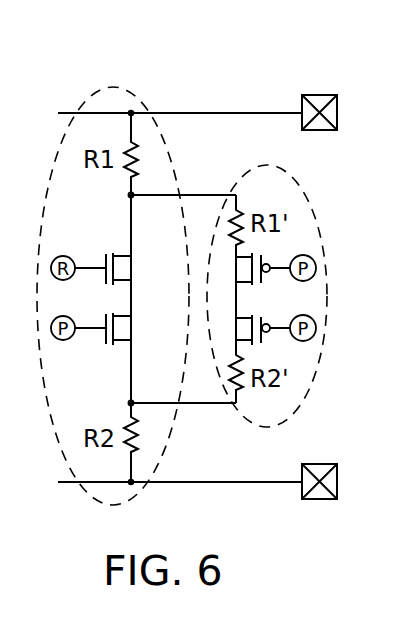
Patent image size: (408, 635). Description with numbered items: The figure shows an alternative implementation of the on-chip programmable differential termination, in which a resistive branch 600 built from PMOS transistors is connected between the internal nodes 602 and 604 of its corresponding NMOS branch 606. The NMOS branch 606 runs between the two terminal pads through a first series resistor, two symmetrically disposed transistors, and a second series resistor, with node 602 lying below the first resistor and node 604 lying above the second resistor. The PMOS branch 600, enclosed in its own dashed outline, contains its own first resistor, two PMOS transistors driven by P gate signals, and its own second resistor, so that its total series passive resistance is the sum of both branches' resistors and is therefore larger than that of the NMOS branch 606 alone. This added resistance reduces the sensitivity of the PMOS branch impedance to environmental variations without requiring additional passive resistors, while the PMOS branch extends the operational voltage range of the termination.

The resistive branch 600 is at (308, 197).
The internal node 602 is at (131, 195).
The internal node 604 is at (131, 403).
The resistive branch 606 is at (122, 88).